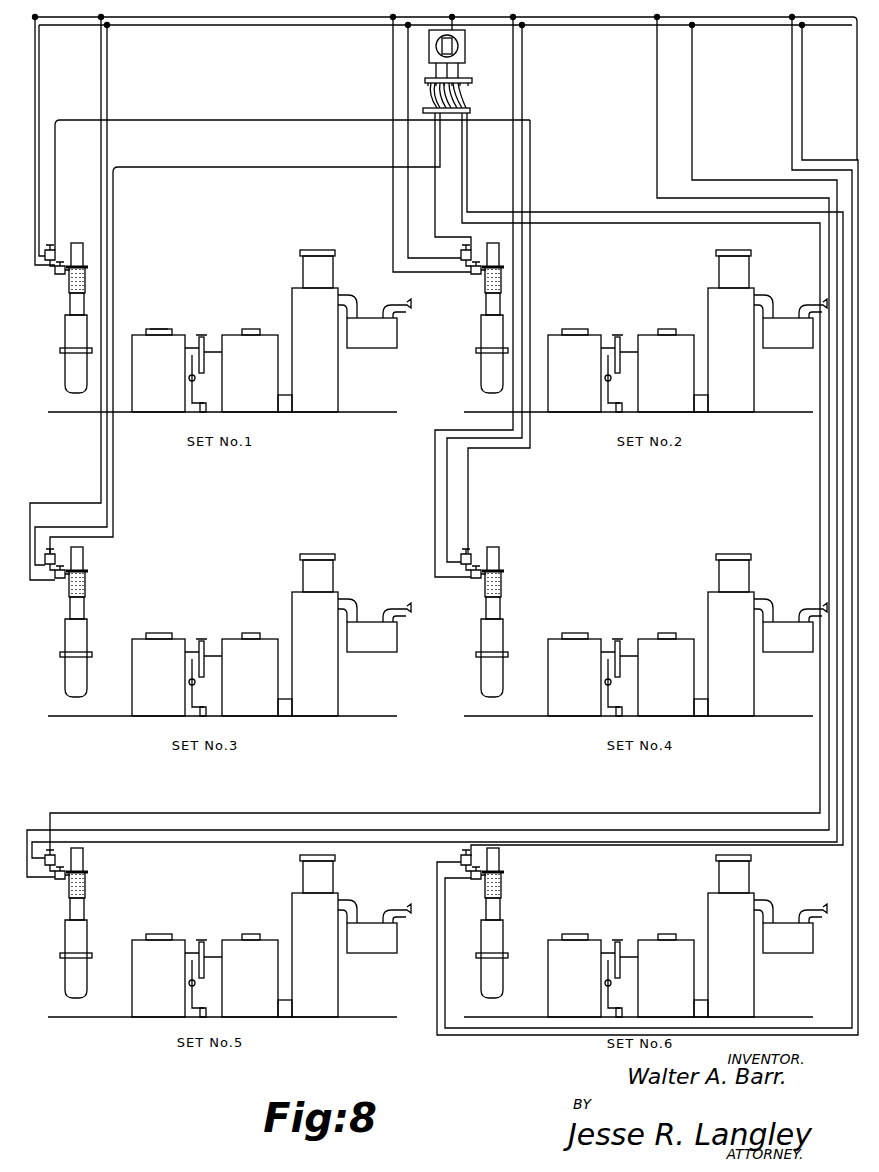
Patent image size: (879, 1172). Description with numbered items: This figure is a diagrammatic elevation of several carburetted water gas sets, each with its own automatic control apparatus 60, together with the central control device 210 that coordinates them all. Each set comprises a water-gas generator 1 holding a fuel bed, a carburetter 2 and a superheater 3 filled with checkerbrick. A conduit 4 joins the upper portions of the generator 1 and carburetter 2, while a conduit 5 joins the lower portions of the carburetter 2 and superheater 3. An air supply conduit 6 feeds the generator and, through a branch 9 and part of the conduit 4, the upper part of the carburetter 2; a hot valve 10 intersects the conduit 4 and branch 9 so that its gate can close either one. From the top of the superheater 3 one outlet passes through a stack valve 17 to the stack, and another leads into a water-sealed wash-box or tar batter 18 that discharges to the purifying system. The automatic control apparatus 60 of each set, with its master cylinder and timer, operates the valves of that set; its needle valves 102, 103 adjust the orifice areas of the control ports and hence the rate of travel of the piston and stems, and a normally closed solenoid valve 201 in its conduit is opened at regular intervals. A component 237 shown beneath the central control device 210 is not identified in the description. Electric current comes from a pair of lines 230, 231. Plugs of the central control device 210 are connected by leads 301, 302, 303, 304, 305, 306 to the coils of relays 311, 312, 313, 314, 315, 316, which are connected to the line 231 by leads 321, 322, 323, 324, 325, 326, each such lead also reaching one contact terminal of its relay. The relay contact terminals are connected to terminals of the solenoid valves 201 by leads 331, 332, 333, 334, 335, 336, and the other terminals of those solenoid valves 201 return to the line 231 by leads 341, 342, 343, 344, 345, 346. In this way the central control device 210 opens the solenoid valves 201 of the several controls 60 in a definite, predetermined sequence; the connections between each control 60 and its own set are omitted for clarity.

The water-gas generator 1 is at (366, 673).
The carburetter 2 is at (458, 673).
The superheater 3 is at (523, 633).
The conduit 4 is at (202, 337).
The conduit 5 is at (290, 408).
The air supply conduit 6 is at (204, 412).
The branch 9 is at (404, 681).
The hot valve 10 is at (618, 337).
The stack valve 17 is at (740, 554).
The wash-box or tar batter 18 is at (582, 624).
The automatic control apparatus 60 is at (66, 337).
The needle valve 102 is at (58, 884).
The needle valve 103 is at (85, 890).
The solenoid valve 201 is at (58, 276).
The central control device 210 is at (465, 42).
The line 230 is at (170, 17).
The line 231 is at (262, 25).
The distributing manifold 237 is at (470, 80).
The lead 301 is at (255, 120).
The lead 302 is at (433, 203).
The lead 303 is at (238, 167).
The lead 304 is at (530, 168).
The lead 305 is at (462, 175).
The lead 306 is at (550, 212).
The relay 311 is at (52, 248).
The relay 312 is at (464, 276).
The relay 313 is at (55, 555).
The relay 314 is at (460, 562).
The relay 315 is at (55, 858).
The relay 316 is at (460, 862).
The lead 321 is at (38, 48).
The lead 322 is at (108, 72).
The lead 323 is at (393, 58).
The lead 324 is at (513, 55).
The lead 325 is at (692, 62).
The lead 326 is at (802, 65).
The lead 331 is at (80, 250).
The lead 332 is at (470, 255).
The lead 333 is at (84, 562).
The lead 334 is at (470, 560).
The lead 335 is at (84, 860).
The lead 336 is at (500, 862).
The lead 341 is at (39, 72).
The lead 342 is at (101, 98).
The lead 343 is at (408, 88).
The lead 344 is at (522, 88).
The lead 345 is at (657, 128).
The lead 346 is at (792, 123).